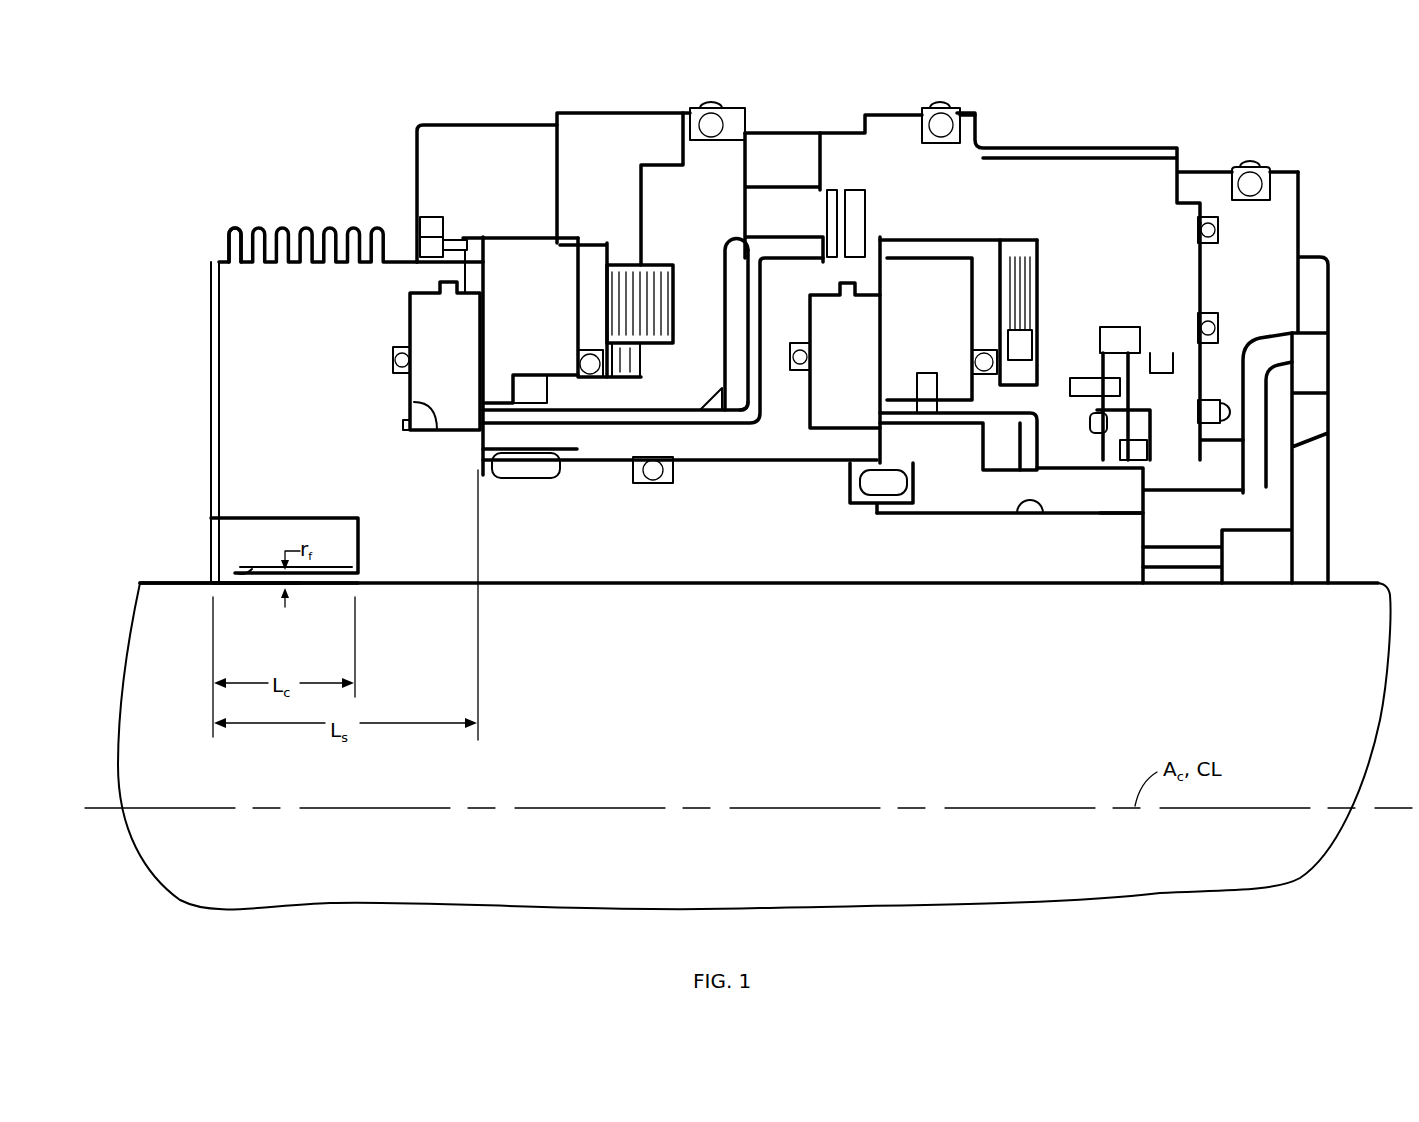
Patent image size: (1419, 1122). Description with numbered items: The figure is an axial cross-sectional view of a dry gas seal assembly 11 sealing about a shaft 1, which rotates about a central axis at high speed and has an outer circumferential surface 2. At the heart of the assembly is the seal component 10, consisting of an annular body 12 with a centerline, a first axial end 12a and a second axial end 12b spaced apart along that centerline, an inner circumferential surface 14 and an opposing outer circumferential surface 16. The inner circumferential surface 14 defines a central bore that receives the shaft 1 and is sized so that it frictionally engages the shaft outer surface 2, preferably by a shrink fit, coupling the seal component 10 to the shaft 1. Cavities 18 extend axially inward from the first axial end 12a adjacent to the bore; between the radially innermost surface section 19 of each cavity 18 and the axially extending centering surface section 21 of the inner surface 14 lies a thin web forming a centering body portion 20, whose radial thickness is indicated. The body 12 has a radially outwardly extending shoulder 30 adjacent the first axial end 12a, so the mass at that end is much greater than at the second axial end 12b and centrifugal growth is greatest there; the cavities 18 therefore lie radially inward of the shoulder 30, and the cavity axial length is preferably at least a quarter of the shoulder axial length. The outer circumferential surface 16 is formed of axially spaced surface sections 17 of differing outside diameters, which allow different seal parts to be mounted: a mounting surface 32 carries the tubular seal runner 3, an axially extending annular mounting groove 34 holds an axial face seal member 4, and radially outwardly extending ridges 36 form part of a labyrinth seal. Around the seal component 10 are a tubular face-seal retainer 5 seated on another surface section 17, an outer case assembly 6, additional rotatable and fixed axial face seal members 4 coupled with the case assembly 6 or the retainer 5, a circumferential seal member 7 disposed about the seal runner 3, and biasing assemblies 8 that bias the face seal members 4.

The shaft 1 is at (425, 884).
The outer circumferential surface 2 is at (1362, 583).
The seal runner 3 is at (1110, 540).
The axial face seal member 4 is at (431, 331).
The face-seal retainer 5 is at (615, 447).
The outer case assembly 6 is at (1030, 142).
The circumferential seal member 7 is at (1100, 475).
The biasing assembly 8 is at (648, 262).
The seal component 10 is at (240, 200).
The seal assembly 11 is at (328, 94).
The annular body 12 is at (206, 328).
The first axial end 12a is at (208, 373).
The second axial end 12b is at (1147, 533).
The inner circumferential surface 14 is at (609, 588).
The outer circumferential surface 16 is at (737, 452).
The surface section 17 is at (688, 408).
The cavity 18 is at (211, 537).
The radially innermost surface section 19 is at (250, 566).
The centering body portion 20 is at (209, 560).
The centering surface section 21 is at (255, 593).
The shoulder 30 is at (283, 303).
The mounting surface 32 is at (1017, 513).
The annular mounting groove 34 is at (430, 432).
The ridges 36 is at (283, 233).